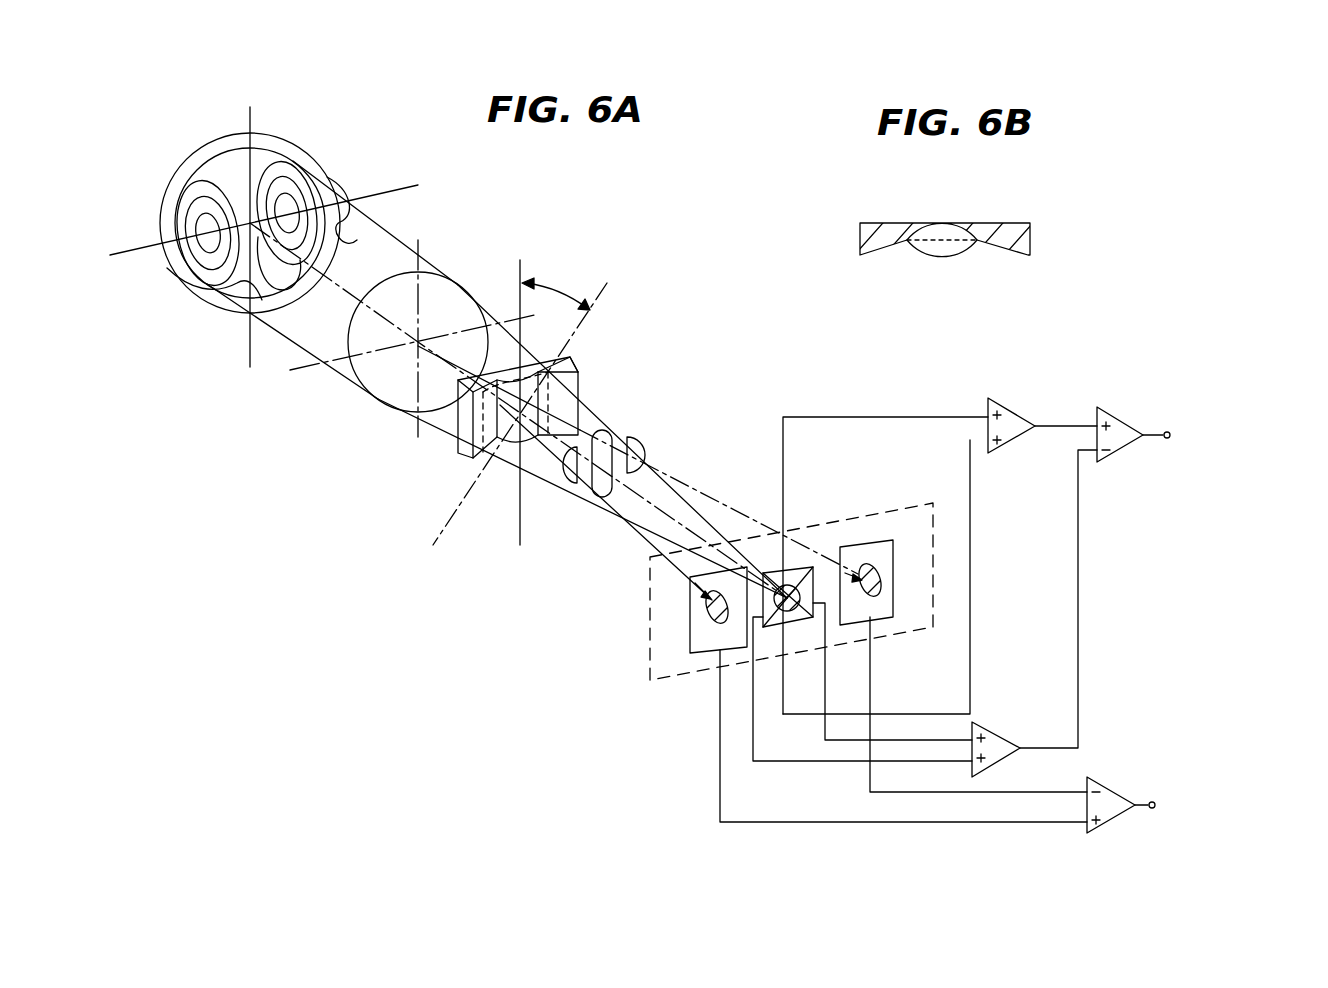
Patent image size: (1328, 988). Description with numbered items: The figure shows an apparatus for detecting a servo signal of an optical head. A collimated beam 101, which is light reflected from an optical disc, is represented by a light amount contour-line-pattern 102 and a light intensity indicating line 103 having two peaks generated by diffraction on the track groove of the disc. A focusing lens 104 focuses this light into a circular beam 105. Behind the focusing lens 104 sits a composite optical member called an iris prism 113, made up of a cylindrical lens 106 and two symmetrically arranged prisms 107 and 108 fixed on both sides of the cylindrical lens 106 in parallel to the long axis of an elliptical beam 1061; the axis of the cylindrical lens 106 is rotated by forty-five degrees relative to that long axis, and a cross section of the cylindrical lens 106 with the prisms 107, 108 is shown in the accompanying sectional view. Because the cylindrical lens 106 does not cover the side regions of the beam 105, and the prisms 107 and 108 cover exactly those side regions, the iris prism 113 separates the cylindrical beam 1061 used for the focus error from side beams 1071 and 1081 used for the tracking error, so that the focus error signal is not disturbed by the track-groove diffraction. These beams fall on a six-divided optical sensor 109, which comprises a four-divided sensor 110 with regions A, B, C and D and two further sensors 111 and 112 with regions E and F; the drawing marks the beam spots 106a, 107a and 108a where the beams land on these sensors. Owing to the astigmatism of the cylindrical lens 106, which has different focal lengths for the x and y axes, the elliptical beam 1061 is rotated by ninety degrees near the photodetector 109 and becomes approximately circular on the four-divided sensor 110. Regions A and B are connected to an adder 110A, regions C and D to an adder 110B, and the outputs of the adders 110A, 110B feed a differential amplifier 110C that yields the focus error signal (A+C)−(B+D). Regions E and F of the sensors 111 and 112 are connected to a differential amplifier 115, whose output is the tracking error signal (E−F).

In FIG. 6A, the collimated beam 101 is at (132, 244).
In FIG. 6A, the light amount contour-line-pattern 102 is at (290, 200).
In FIG. 6A, the light intensity indicating line 103 is at (237, 293).
In FIG. 6A, the focusing lens 104 is at (452, 272).
In FIG. 6A, the circular beam 105 is at (463, 457).
In FIG. 6A, the cylindrical lens 106 is at (497, 440).
In FIG. 6B, the cylindrical lens 106 is at (935, 245).
In FIG. 6A, the prism 107 is at (480, 452).
In FIG. 6B, the prism 107 is at (870, 225).
In FIG. 6A, the prism 108 is at (570, 383).
In FIG. 6A, the six-divided optical sensor 109 is at (950, 533).
In FIG. 6A, the four-divided sensor 110 is at (812, 563).
In FIG. 6A, the adder 110A is at (1017, 415).
In FIG. 6A, the adder 110B is at (985, 723).
In FIG. 6A, the differential amplifier 110C is at (1120, 430).
In FIG. 6A, the optical sensor 111 is at (716, 648).
In FIG. 6A, the optical sensor 112 is at (887, 625).
In FIG. 6A, the iris prism 113 is at (470, 463).
In FIG. 6B, the iris prism 113 is at (967, 227).
In FIG. 6A, the differential amplifier 115 is at (1103, 787).
In FIG. 6A, the elliptical beam 1061 is at (600, 497).
In FIG. 6A, the beam 1071 is at (573, 478).
In FIG. 6A, the beam 1081 is at (662, 415).
In FIG. 6A, the beam spot 106a is at (765, 630).
In FIG. 6A, the beam spot 107a is at (710, 640).
In FIG. 6A, the beam spot 108a is at (867, 563).